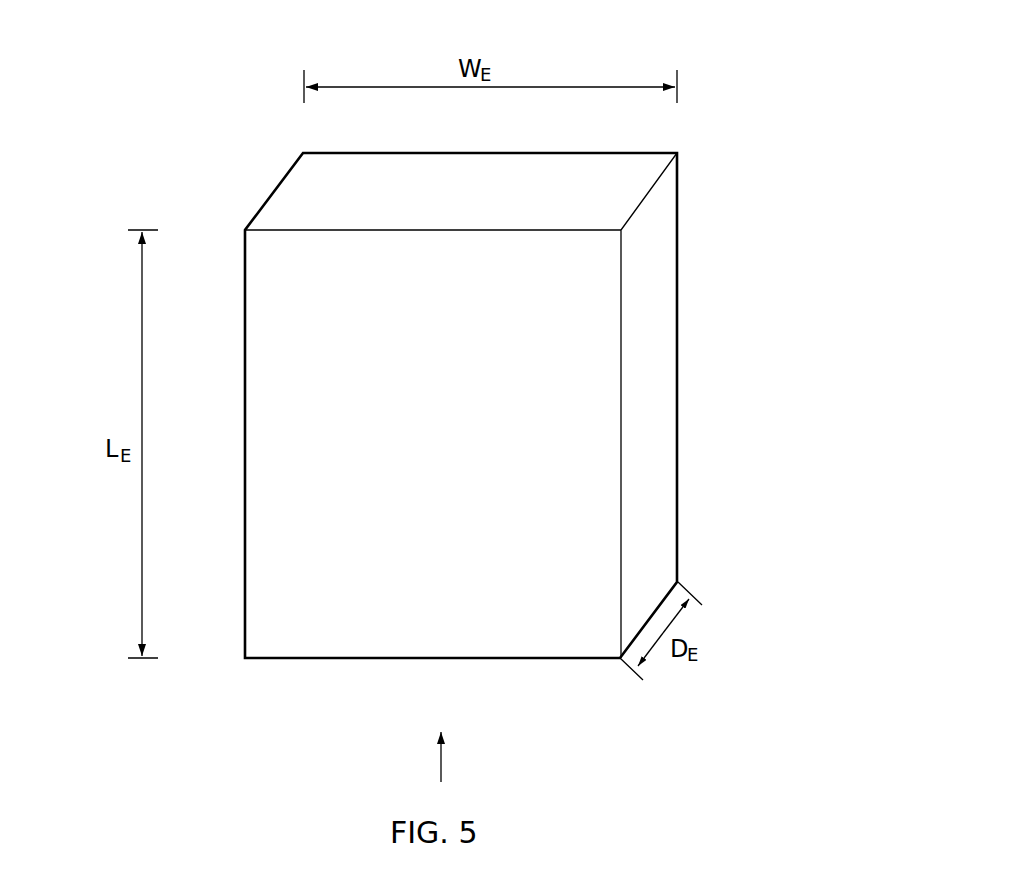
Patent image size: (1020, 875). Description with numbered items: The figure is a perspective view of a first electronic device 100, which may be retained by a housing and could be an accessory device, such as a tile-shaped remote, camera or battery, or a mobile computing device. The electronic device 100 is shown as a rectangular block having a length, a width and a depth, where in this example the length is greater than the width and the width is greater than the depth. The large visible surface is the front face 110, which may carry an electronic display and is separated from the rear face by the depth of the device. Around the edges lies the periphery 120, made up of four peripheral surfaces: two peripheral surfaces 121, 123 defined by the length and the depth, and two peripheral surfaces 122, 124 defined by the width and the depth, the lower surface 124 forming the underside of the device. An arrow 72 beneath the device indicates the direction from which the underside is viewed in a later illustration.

The arrow 72 is at (441, 757).
The electronic device 100 is at (237, 677).
The front face 110 is at (436, 437).
The periphery 120 is at (302, 197).
The peripheral surface 121 is at (245, 336).
The peripheral surface 122 is at (419, 172).
The peripheral surface 123 is at (655, 318).
The peripheral surface 124 is at (520, 660).